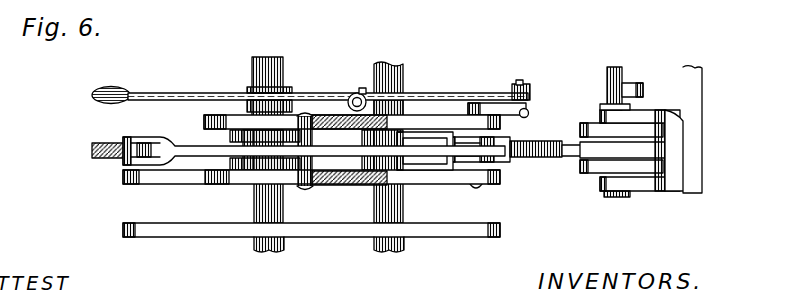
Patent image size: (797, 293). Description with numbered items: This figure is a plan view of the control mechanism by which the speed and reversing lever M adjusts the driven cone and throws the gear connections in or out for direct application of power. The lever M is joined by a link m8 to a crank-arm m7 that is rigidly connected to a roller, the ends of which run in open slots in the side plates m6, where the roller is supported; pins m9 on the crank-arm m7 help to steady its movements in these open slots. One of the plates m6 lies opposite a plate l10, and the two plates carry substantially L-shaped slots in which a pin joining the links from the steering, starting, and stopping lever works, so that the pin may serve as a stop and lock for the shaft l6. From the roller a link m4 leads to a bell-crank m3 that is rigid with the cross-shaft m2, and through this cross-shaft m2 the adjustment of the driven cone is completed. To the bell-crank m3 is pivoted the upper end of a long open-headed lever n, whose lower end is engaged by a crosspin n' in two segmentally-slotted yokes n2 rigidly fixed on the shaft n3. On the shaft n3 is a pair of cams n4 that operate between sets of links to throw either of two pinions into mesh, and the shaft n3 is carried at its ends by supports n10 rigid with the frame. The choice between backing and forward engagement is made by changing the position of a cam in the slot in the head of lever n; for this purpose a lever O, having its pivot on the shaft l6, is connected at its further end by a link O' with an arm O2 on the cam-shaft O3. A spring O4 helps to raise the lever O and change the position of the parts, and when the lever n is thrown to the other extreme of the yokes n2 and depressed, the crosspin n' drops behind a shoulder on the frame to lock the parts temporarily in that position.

The lever O is at (310, 129).
The link O' is at (534, 91).
The arm O2 is at (529, 110).
The cam-shaft O3 is at (476, 186).
The spring O4 is at (362, 93).
The plates m6 is at (220, 114).
The link m4 is at (345, 185).
The crank-arm m7 is at (284, 126).
The pins m9 is at (312, 118).
The bell-crank m3 is at (411, 171).
The lever M is at (90, 150).
The link m8 is at (182, 145).
The plate l10 is at (311, 242).
The shaft l6 is at (268, 253).
The cross-shaft m2 is at (406, 250).
The lever n is at (617, 164).
The yokes n2 is at (672, 139).
The crosspin n' is at (660, 138).
The shaft n3 is at (618, 58).
The cams n4 is at (642, 88).
The supports n10 is at (666, 193).